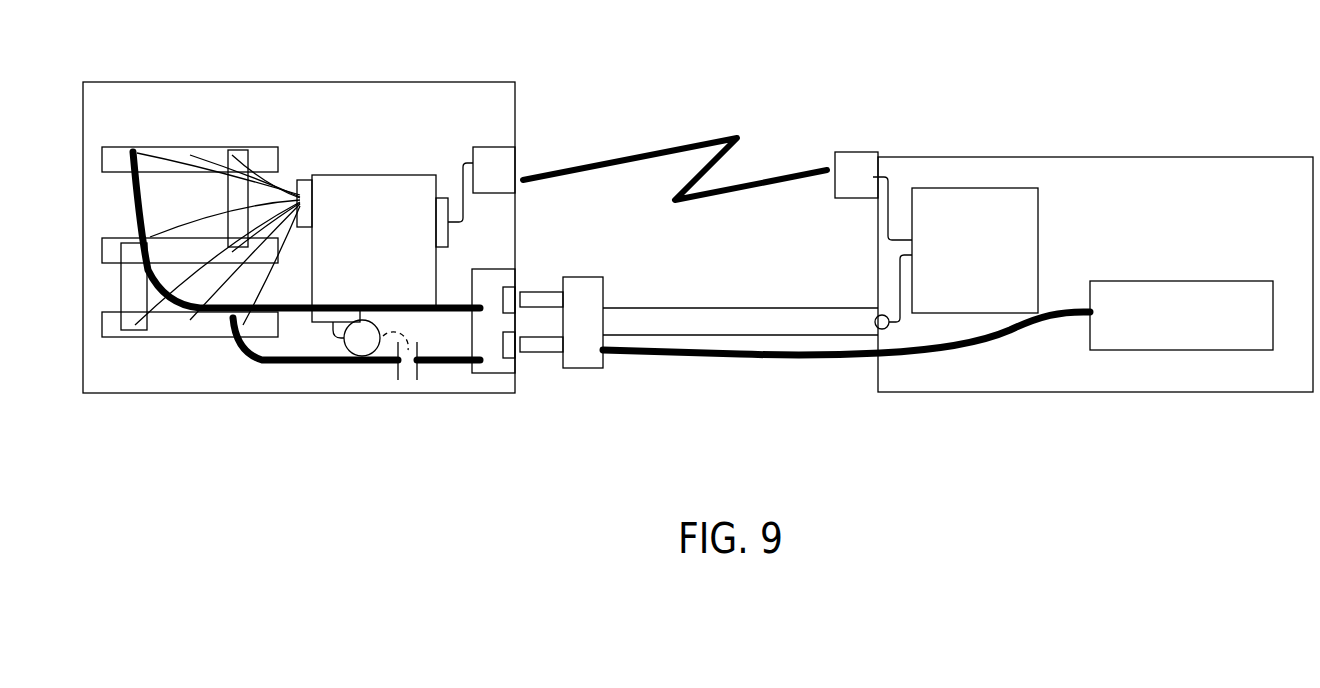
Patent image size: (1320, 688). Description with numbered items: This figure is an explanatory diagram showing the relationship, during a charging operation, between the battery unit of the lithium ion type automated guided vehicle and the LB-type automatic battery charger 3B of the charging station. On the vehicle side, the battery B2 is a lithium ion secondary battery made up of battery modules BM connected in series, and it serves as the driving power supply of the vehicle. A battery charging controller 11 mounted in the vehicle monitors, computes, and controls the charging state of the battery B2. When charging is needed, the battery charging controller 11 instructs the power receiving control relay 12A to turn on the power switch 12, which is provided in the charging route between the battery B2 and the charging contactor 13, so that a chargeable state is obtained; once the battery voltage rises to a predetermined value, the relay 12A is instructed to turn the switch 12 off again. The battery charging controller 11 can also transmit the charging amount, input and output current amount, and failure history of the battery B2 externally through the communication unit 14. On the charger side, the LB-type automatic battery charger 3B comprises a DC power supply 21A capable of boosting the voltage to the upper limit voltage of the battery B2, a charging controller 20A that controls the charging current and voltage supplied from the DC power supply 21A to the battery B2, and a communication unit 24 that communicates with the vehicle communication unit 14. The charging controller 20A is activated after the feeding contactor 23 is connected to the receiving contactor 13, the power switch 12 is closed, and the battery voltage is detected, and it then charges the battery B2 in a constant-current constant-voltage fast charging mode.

The battery B2 is at (187, 108).
The battery module BM is at (117, 152).
The battery charging controller 11 is at (386, 237).
The power switch 12 is at (408, 372).
The power receiving control relay 12A is at (359, 347).
The charging contactor 13 is at (495, 365).
The communication unit 14 is at (516, 155).
The feeding contactor 23 is at (585, 357).
The communication unit 24 is at (853, 170).
The charging controller 20A is at (967, 200).
The DC power supply 21A is at (1181, 352).
The LB-type automatic battery charger 3B is at (1200, 145).